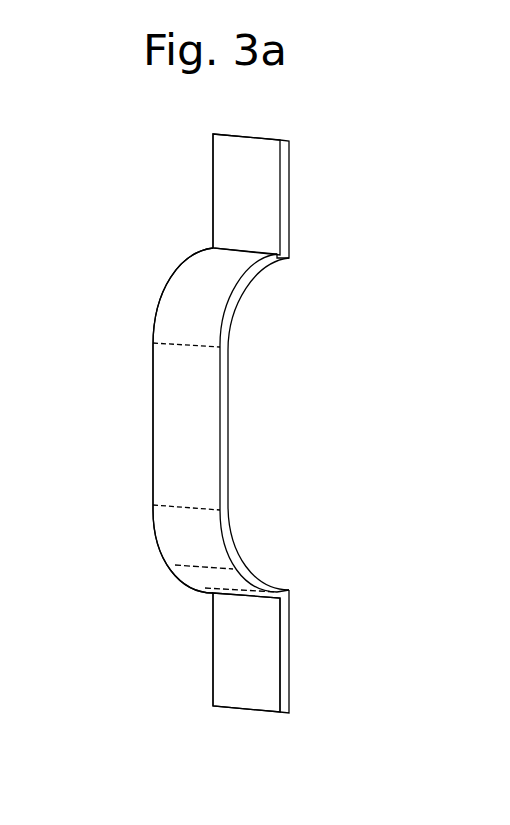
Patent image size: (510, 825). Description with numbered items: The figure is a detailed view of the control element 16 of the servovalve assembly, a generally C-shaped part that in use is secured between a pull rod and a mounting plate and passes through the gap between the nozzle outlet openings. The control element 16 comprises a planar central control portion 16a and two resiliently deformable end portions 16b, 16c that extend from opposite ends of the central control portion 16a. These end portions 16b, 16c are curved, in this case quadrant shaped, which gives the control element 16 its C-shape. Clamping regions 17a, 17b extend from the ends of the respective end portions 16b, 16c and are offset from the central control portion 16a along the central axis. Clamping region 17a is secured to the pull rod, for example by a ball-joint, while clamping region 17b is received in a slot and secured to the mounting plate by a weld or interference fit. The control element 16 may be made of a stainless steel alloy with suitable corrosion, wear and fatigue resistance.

The control element 16 is at (152, 212).
The central control portion 16a is at (205, 425).
The resiliently deformable end portion 16b is at (187, 543).
The resiliently deformable end portion 16c is at (168, 307).
The clamping region 17a is at (267, 187).
The clamping region 17b is at (265, 667).